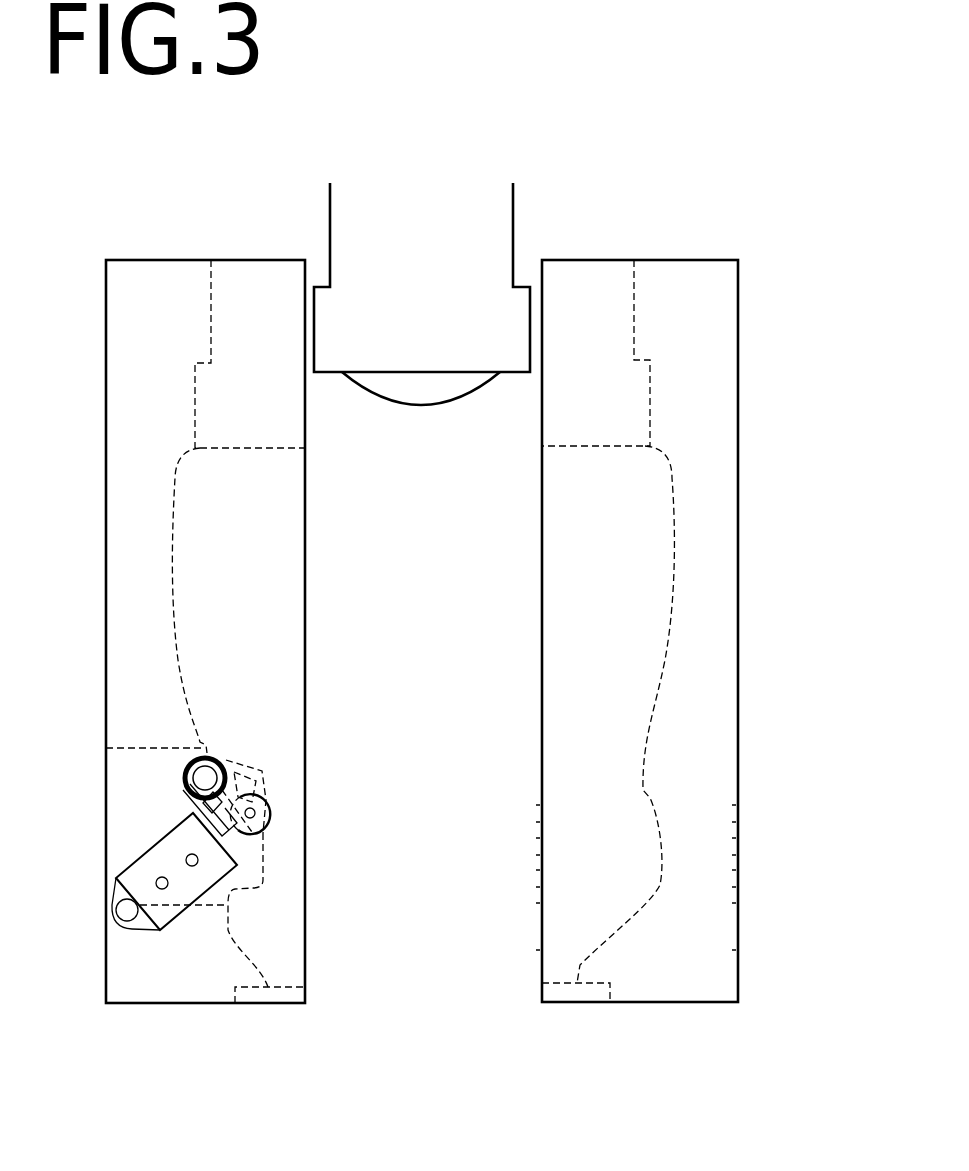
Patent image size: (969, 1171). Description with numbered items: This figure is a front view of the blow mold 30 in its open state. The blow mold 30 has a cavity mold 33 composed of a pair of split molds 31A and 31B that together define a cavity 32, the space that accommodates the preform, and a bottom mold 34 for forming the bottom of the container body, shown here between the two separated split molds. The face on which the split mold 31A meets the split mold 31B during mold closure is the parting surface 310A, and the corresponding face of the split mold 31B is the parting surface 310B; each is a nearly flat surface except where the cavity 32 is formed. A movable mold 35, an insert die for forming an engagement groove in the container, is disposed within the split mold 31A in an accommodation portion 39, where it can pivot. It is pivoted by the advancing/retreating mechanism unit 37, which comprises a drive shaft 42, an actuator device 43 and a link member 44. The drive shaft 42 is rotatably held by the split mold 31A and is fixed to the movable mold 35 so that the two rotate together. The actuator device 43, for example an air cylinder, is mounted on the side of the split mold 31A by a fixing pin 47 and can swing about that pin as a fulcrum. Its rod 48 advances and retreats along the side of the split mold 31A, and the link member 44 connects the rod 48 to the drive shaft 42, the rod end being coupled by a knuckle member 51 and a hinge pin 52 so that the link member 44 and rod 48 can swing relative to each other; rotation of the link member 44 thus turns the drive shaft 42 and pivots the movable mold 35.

The blow mold 30 is at (697, 162).
The split mold 31A is at (147, 272).
The split mold 31B is at (697, 258).
The cavity mold 33 is at (419, 593).
The bottom mold 34 is at (419, 397).
The parting surface 310A is at (306, 511).
The parting surface 310B is at (542, 520).
The cavity 32 is at (295, 607).
The advancing/retreating mechanism unit 37 is at (147, 768).
The drive shaft 42 is at (220, 758).
The link member 44 is at (247, 773).
The movable mold 35 is at (263, 777).
The accommodation portion 39 is at (311, 766).
The knuckle member 51 is at (270, 808).
The hinge pin 52 is at (265, 838).
The rod 48 is at (185, 808).
The actuator device 43 is at (160, 848).
The fixing pin 47 is at (127, 910).